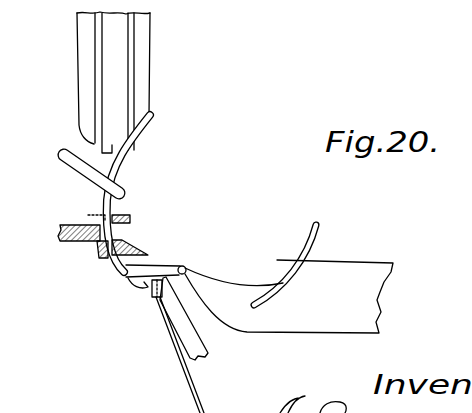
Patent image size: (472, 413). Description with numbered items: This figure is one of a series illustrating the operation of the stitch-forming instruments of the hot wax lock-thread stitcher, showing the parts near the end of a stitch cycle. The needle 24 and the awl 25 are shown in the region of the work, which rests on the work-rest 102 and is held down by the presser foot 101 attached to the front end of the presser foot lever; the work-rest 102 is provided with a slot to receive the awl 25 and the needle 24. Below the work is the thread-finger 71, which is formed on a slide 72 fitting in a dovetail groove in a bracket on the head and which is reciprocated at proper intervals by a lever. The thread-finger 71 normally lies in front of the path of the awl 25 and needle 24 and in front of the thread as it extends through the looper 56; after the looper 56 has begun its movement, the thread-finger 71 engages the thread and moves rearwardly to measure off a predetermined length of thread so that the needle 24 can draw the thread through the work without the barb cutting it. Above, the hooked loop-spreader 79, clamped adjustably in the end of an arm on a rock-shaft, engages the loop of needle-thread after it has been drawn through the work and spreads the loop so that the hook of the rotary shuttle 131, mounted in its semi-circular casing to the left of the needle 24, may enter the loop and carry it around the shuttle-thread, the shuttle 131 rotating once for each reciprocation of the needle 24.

The shuttle 131 is at (143, 40).
The awl 25 is at (120, 163).
The loop-spreader 79 is at (86, 180).
The presser foot 101 is at (130, 218).
The work-rest 102 is at (148, 250).
The thread-finger 71 is at (186, 268).
The needle 24 is at (286, 282).
The slide 72 is at (289, 296).
The looper 56 is at (153, 297).